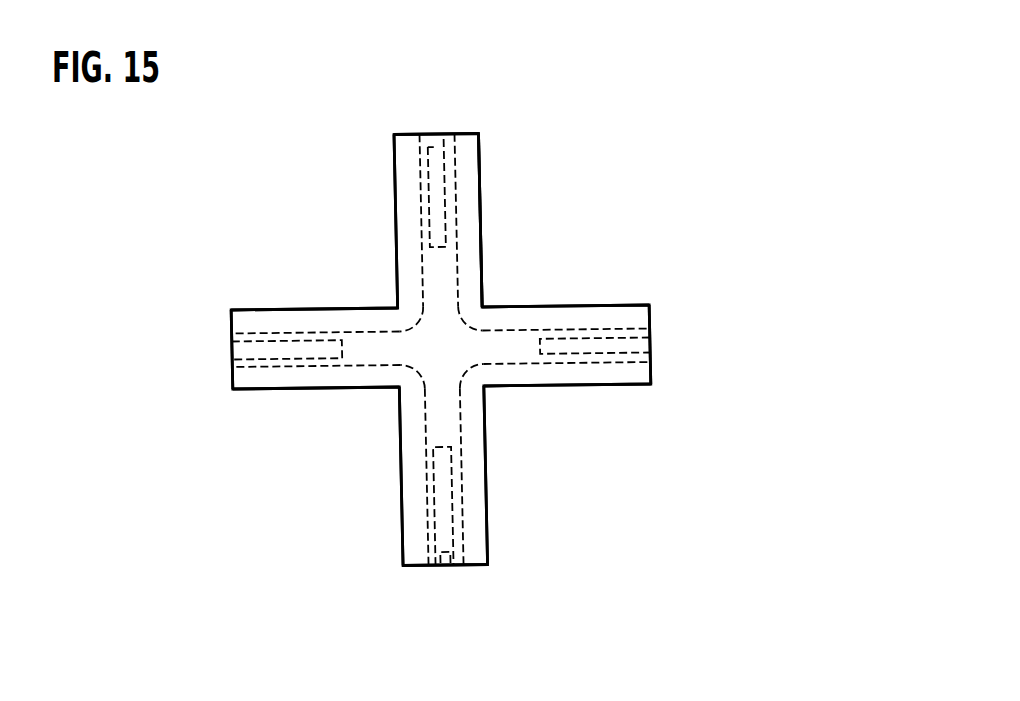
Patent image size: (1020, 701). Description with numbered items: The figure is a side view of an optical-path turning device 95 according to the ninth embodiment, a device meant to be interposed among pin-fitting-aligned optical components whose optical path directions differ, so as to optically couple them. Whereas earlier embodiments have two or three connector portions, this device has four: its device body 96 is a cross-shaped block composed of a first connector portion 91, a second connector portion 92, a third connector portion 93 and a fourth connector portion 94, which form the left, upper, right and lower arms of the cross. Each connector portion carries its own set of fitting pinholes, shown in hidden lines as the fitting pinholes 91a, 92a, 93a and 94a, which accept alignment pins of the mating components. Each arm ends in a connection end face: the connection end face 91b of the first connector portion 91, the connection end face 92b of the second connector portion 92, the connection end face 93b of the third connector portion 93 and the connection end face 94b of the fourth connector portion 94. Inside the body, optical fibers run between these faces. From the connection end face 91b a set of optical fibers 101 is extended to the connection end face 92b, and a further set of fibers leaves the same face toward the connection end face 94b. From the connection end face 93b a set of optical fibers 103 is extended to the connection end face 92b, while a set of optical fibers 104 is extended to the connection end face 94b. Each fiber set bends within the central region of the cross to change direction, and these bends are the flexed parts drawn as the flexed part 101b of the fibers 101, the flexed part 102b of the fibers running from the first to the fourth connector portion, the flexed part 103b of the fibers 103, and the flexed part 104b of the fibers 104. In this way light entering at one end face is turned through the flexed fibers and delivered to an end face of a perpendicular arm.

The optical-path turning device 95 is at (504, 128).
The first connector portion 91 is at (256, 309).
The fitting pinholes 91a is at (266, 359).
The connection end face 91b is at (230, 318).
The second connector portion 92 is at (397, 184).
The fitting pinholes 92a is at (443, 134).
The connection end face 92b is at (407, 133).
The third connector portion 93 is at (612, 305).
The fitting pinholes 93a is at (620, 355).
The connection end face 93b is at (653, 307).
The fourth connector portion 94 is at (488, 535).
The fitting pinholes 94a is at (444, 565).
The connection end face 94b is at (478, 565).
The device body 96 is at (480, 182).
The set of optical fibers 101 is at (310, 332).
The flexed part 101b is at (398, 326).
The flexed part 102b is at (404, 386).
The set of optical fibers 103 is at (552, 331).
The flexed part 103b is at (478, 328).
The set of optical fibers 104 is at (460, 432).
The flexed part 104b is at (481, 386).